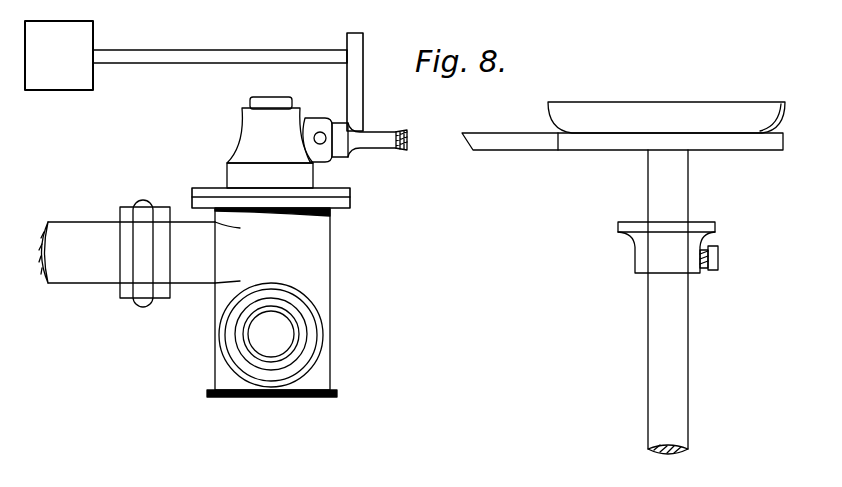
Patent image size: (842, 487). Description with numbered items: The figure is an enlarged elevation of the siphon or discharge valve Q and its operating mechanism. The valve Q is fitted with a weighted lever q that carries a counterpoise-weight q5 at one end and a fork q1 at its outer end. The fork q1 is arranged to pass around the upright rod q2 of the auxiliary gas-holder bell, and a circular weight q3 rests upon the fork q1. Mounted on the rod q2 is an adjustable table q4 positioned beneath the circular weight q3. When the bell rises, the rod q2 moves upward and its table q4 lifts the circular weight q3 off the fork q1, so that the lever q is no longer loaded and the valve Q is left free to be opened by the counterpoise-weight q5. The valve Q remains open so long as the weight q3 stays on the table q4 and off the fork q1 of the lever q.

The siphon or discharge valve Q is at (272, 302).
The weighted lever q is at (483, 139).
The fork q1 is at (600, 137).
The upright rod q2 is at (668, 302).
The circular weight q3 is at (666, 117).
The adjustable table q4 is at (668, 247).
The counterpoise-weight q5 is at (59, 55).